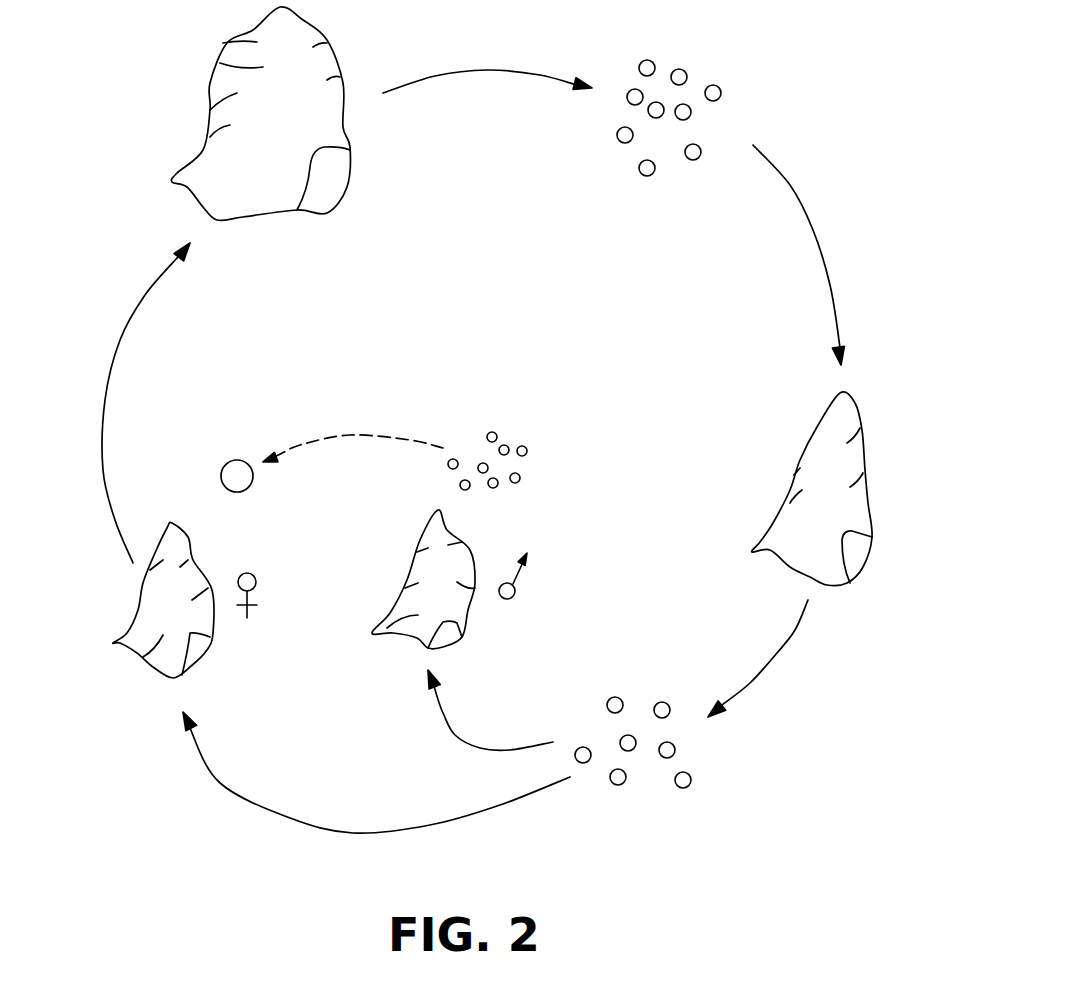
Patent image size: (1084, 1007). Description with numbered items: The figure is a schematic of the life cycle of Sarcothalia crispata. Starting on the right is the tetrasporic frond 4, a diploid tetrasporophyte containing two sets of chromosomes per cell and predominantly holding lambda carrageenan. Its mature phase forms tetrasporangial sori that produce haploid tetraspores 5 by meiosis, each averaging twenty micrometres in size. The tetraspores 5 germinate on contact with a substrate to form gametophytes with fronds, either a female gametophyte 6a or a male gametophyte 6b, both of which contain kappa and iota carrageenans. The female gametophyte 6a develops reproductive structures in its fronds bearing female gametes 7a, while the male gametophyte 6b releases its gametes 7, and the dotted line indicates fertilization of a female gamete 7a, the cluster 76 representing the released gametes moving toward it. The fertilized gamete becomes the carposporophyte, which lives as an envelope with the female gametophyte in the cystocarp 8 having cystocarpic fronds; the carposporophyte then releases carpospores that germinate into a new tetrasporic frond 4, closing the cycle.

The tetrasporic frond 4 is at (847, 507).
The tetraspores 5 is at (653, 770).
The female gametophyte 6a is at (140, 657).
The male gametophyte 6b is at (388, 625).
The gametes 7 is at (700, 75).
The female gametes 7a is at (222, 472).
The small particles 76 is at (468, 440).
The cystocarp 8 is at (223, 53).